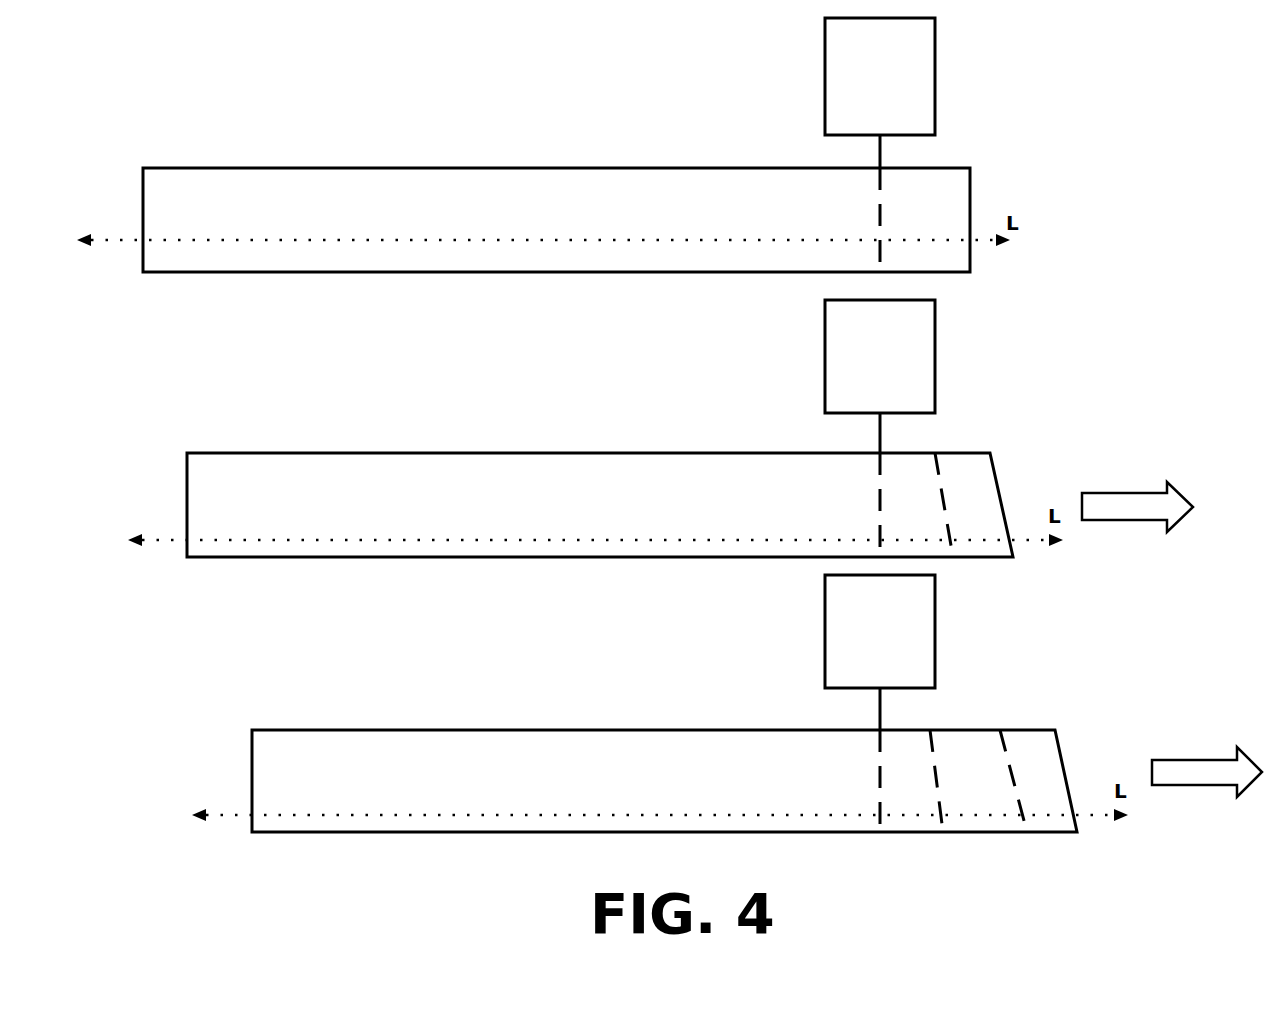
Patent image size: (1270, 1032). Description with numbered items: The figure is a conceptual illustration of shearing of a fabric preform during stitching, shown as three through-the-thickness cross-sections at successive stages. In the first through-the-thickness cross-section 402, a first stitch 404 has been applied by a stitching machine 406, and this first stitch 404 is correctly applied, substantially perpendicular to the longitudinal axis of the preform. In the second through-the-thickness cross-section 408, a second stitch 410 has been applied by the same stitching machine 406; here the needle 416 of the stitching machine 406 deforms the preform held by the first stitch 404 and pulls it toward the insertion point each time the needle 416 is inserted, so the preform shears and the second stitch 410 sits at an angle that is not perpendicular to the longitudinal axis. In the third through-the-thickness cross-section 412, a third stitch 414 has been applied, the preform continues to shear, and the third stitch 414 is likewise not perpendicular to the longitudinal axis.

The first through-the-thickness cross-section 402 is at (142, 128).
The first stitch 404 is at (930, 500).
The stitching machine 406 is at (847, 353).
The second through-the-thickness cross-section 408 is at (142, 416).
The second stitch 410 is at (886, 642).
The third through-the-thickness cross-section 412 is at (143, 673).
The third stitch 414 is at (856, 781).
The needle 416 is at (828, 420).